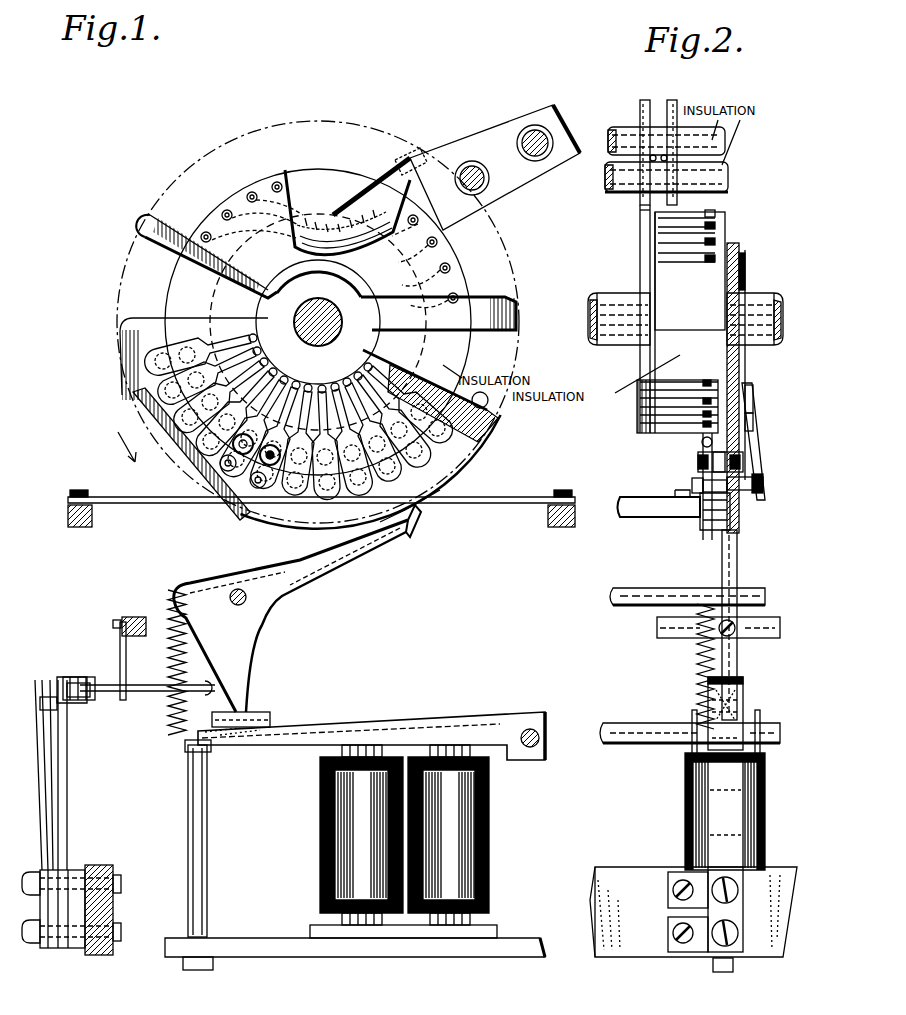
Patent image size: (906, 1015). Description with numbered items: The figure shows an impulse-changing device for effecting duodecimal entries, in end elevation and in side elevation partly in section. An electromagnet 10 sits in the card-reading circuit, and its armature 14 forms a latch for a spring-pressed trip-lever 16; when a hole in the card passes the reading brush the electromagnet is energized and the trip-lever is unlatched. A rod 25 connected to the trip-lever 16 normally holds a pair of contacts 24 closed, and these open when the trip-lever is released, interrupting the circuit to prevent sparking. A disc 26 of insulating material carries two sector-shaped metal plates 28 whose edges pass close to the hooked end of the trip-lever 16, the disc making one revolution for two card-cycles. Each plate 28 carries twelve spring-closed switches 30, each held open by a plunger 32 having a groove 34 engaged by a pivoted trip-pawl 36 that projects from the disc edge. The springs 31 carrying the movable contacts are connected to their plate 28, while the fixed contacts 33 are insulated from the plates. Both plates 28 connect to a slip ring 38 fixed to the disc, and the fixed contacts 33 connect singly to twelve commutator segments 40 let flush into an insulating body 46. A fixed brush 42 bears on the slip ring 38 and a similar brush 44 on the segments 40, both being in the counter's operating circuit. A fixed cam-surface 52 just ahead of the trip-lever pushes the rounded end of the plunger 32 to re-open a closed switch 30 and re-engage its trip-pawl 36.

In FIG. 1, the electromagnet 10 is at (486, 795).
In FIG. 2, the electromagnet 10 is at (765, 809).
In FIG. 1, the armature 14 is at (340, 727).
In FIG. 2, the armature 14 is at (756, 725).
In FIG. 1, the trip-lever 16 is at (282, 578).
In FIG. 2, the trip-lever 16 is at (736, 553).
In FIG. 1, the pair of contacts 24 is at (65, 743).
In FIG. 2, the pair of contacts 24 is at (744, 697).
In FIG. 1, the rod 25 is at (147, 688).
In FIG. 1, the disc 26 is at (447, 351).
In FIG. 2, the disc 26 is at (745, 420).
In FIG. 1, the sector-shaped metal plate 28 is at (503, 303).
In FIG. 2, the sector-shaped metal plate 28 is at (740, 406).
In FIG. 2, the spring-closed switch 30 is at (748, 456).
In FIG. 1, the spring 31 is at (160, 348).
In FIG. 2, the spring 31 is at (753, 435).
In FIG. 1, the plunger 32 is at (258, 489).
In FIG. 2, the plunger 32 is at (752, 500).
In FIG. 1, the fixed contact 33 is at (220, 464).
In FIG. 2, the fixed contact 33 is at (705, 466).
In FIG. 2, the groove 34 is at (758, 482).
In FIG. 1, the trip-pawl 36 is at (433, 493).
In FIG. 2, the trip-pawl 36 is at (722, 526).
In FIG. 2, the slip ring 38 is at (643, 328).
In FIG. 1, the commutator segment 40 is at (330, 214).
In FIG. 2, the commutator segment 40 is at (688, 262).
In FIG. 2, the fixed brush 42 is at (640, 204).
In FIG. 1, the brush 44 is at (392, 218).
In FIG. 2, the brush 44 is at (680, 205).
In FIG. 2, the body of insulating material 46 is at (695, 330).
In FIG. 2, the fixed cam-surface 52 is at (692, 486).